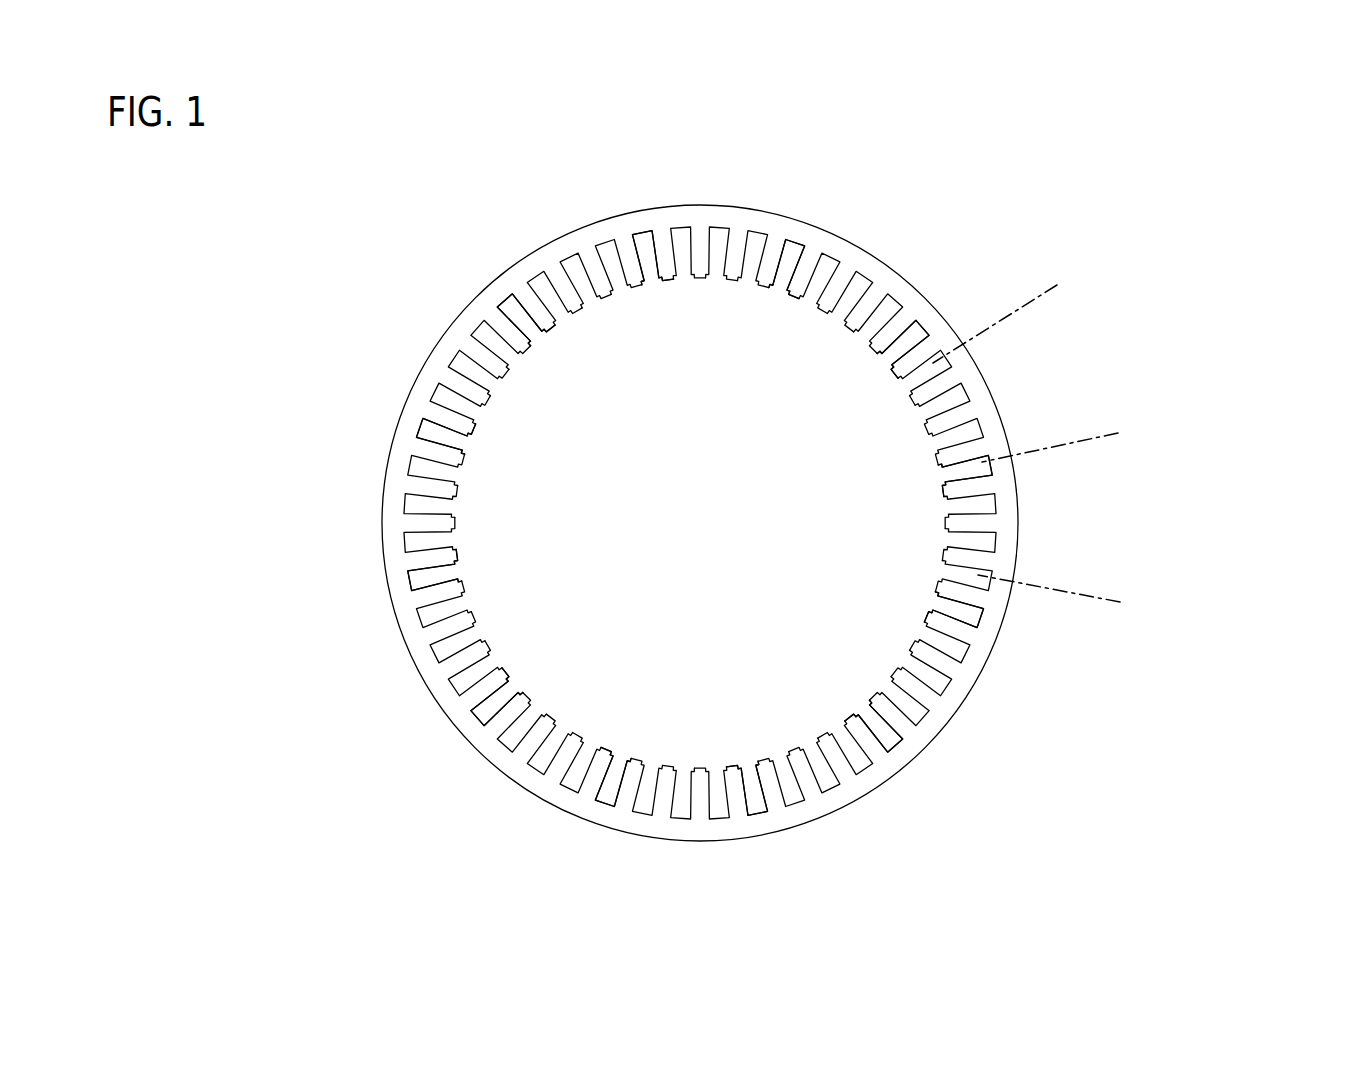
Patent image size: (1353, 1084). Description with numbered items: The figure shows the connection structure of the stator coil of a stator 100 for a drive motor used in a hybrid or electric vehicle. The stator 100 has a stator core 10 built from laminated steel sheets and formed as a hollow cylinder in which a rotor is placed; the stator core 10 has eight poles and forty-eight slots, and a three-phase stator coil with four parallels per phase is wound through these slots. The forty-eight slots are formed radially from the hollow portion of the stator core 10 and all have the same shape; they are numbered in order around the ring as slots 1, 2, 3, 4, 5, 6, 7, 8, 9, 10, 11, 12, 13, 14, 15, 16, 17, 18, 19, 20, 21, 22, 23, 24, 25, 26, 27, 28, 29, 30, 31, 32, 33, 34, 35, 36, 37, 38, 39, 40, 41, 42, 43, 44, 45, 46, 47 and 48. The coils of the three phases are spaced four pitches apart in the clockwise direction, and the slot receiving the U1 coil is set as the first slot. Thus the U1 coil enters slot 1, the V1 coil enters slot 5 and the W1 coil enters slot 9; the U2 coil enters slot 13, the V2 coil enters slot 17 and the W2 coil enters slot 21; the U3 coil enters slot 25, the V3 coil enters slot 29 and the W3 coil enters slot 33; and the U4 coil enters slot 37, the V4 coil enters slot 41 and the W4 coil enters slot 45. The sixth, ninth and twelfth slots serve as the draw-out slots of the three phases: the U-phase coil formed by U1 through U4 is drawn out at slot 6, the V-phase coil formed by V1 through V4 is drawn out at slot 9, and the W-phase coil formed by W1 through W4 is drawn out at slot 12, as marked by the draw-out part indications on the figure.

The stator 100 is at (717, 134).
The stator core 10 is at (900, 236).
The first slot 1 is at (792, 275).
The second slot 2 is at (825, 283).
The third slot 3 is at (853, 305).
The fourth slot 4 is at (882, 324).
The fifth slot 5 is at (904, 349).
The sixth slot 6 is at (927, 377).
The seventh slot 7 is at (940, 409).
The eighth slot 8 is at (957, 441).
The ninth slot 9 is at (960, 476).
The eleventh slot 11 is at (960, 546).
The twelfth slot 12 is at (963, 581).
The thirteenth slot 13 is at (948, 614).
The fourteenth slot 14 is at (940, 648).
The fifteenth slot 15 is at (919, 674).
The sixteenth slot 16 is at (899, 705).
The seventeenth slot 17 is at (874, 724).
The eighteenth slot 18 is at (845, 750).
The nineteenth slot 19 is at (815, 760).
The twentieth slot 20 is at (781, 780).
The twenty-first slot 21 is at (747, 780).
The twenty-second slot 22 is at (711, 793).
The twenty-third slot 23 is at (676, 783).
The twenty-fourth slot 24 is at (642, 786).
The twenty-fifth slot 25 is at (608, 771).
The twenty-sixth slot 26 is at (576, 763).
The twenty-seventh slot 27 is at (548, 741).
The twenty-eighth slot 28 is at (518, 722).
The twenty-ninth slot 29 is at (498, 697).
The thirtieth slot 30 is at (472, 668).
The thirty-first slot 31 is at (462, 638).
The thirty-second slot 32 is at (442, 604).
The thirty-third slot 33 is at (442, 570).
The thirty-fourth slot 34 is at (430, 534).
The thirty-fifth slot 35 is at (439, 500).
The thirty-sixth slot 36 is at (436, 465).
The thirty-seventh slot 37 is at (451, 432).
The thirty-eighth slot 38 is at (460, 399).
The thirty-ninth slot 39 is at (481, 372).
The fortieth slot 40 is at (501, 341).
The forty-first slot 41 is at (526, 322).
The forty-second slot 42 is at (554, 295).
The forty-third slot 43 is at (586, 286).
The forty-fourth slot 44 is at (618, 265).
The forty-fifth slot 45 is at (653, 266).
The forty-sixth slot 46 is at (687, 253).
The forty-seventh slot 47 is at (723, 263).
The forty-eighth slot 48 is at (758, 259).
The W4 phase coil W4 is at (642, 247).
The U1 phase coil U1 is at (793, 252).
The V4 phase coil V4 is at (512, 312).
The V1 phase coil V1 is at (912, 337).
The U4 phase coil U4 is at (435, 435).
The W1 phase coil W1 is at (978, 470).
The W3 phase coil W3 is at (427, 582).
The U2 phase coil U2 is at (968, 612).
The V3 phase coil V3 is at (490, 712).
The V2 phase coil V2 is at (890, 733).
The U3 phase coil U3 is at (612, 793).
The W2 phase coil W2 is at (758, 802).